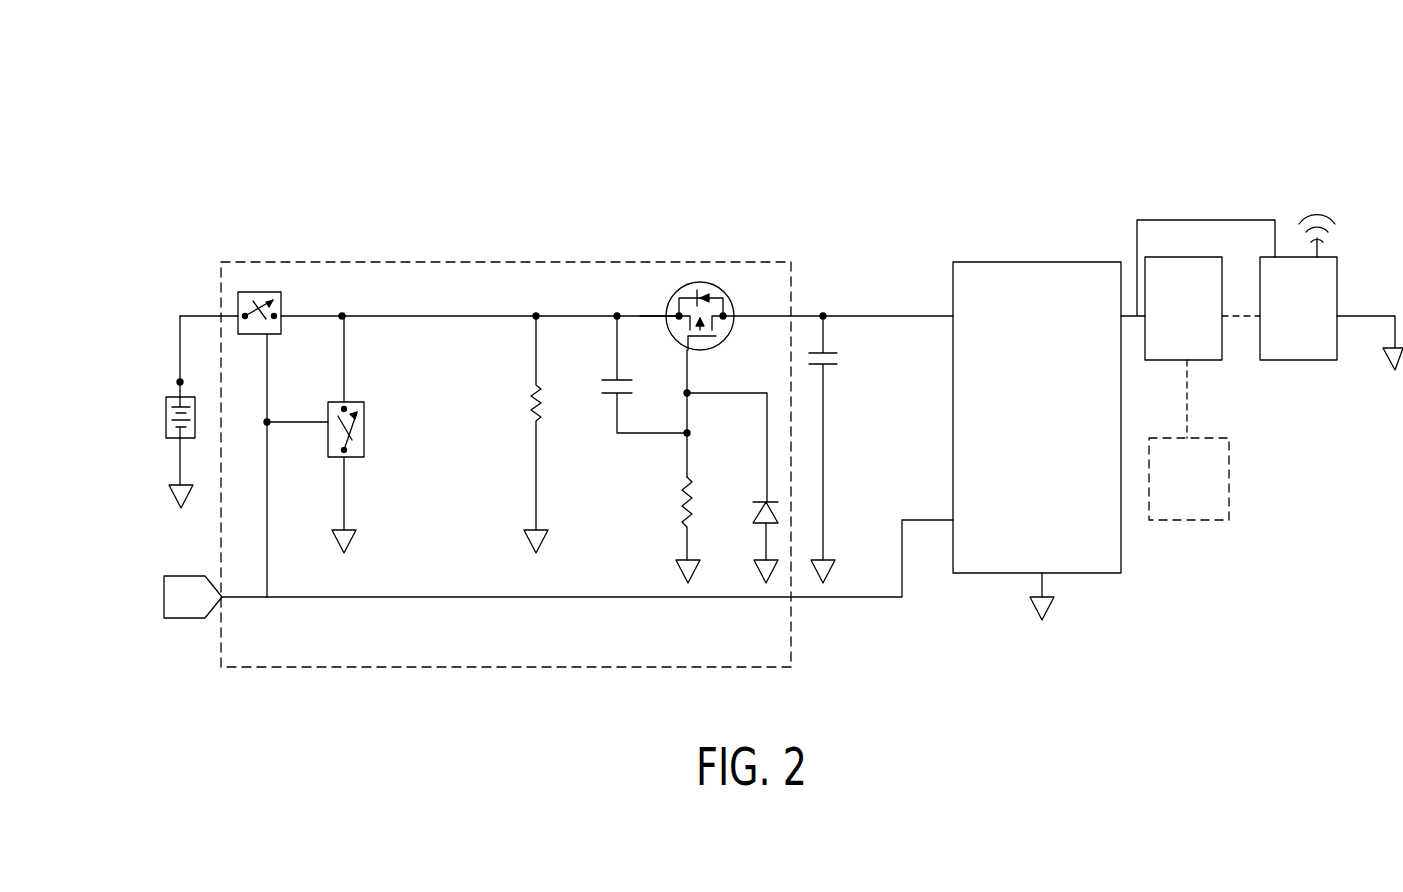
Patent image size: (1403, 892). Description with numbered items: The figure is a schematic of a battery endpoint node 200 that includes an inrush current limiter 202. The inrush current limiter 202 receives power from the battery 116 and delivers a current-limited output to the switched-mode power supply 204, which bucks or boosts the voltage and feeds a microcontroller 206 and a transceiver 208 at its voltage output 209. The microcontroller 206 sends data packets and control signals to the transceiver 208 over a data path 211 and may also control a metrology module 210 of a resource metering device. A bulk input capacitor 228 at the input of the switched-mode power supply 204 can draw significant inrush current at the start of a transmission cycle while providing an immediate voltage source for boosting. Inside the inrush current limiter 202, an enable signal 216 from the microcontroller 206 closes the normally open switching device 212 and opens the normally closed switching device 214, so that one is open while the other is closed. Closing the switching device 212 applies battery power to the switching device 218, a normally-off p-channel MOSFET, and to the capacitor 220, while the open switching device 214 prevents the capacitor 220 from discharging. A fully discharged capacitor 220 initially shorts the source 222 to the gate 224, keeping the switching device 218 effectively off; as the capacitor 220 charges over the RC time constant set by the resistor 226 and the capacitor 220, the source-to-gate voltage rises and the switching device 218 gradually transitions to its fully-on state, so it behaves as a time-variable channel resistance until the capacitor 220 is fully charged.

The battery endpoint node 200 is at (390, 160).
The inrush current limiter 202 is at (563, 258).
The switched-mode power supply 204 is at (1030, 262).
The microcontroller 206 is at (1210, 362).
The transceiver 208 is at (1296, 362).
The voltage output 209 is at (1128, 312).
The metrology module 210 is at (1235, 483).
The data path 211 is at (1250, 305).
The switching device 212 is at (283, 309).
The switching device 214 is at (366, 432).
The enable signal 216 is at (177, 620).
The switching device 218 is at (689, 283).
The capacitor 220 is at (603, 396).
The source 222 is at (654, 312).
The gate 224 is at (690, 392).
The resistor 226 is at (683, 510).
The bulk input capacitor 228 is at (835, 367).
The battery 116 is at (162, 420).